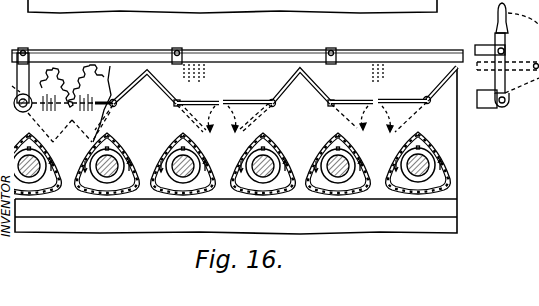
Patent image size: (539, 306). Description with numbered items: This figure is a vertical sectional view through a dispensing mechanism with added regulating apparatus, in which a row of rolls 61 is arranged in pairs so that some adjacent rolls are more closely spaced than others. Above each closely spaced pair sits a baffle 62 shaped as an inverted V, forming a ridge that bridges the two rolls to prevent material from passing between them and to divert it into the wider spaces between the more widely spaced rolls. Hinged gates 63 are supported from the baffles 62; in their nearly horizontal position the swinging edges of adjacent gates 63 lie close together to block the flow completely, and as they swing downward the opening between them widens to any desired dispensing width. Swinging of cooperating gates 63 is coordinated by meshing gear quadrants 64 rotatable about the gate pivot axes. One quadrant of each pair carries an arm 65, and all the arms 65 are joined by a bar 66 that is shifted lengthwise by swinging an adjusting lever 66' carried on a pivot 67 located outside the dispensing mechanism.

The rollers 61 is at (180, 135).
The baffles 62 is at (166, 90).
The gates 63 is at (226, 100).
The meshing gear quadrants 64 is at (93, 80).
The arm 65 is at (24, 62).
The bar 66 is at (237, 54).
The adjusting lever 66' is at (495, 55).
The pivot 67 is at (498, 110).